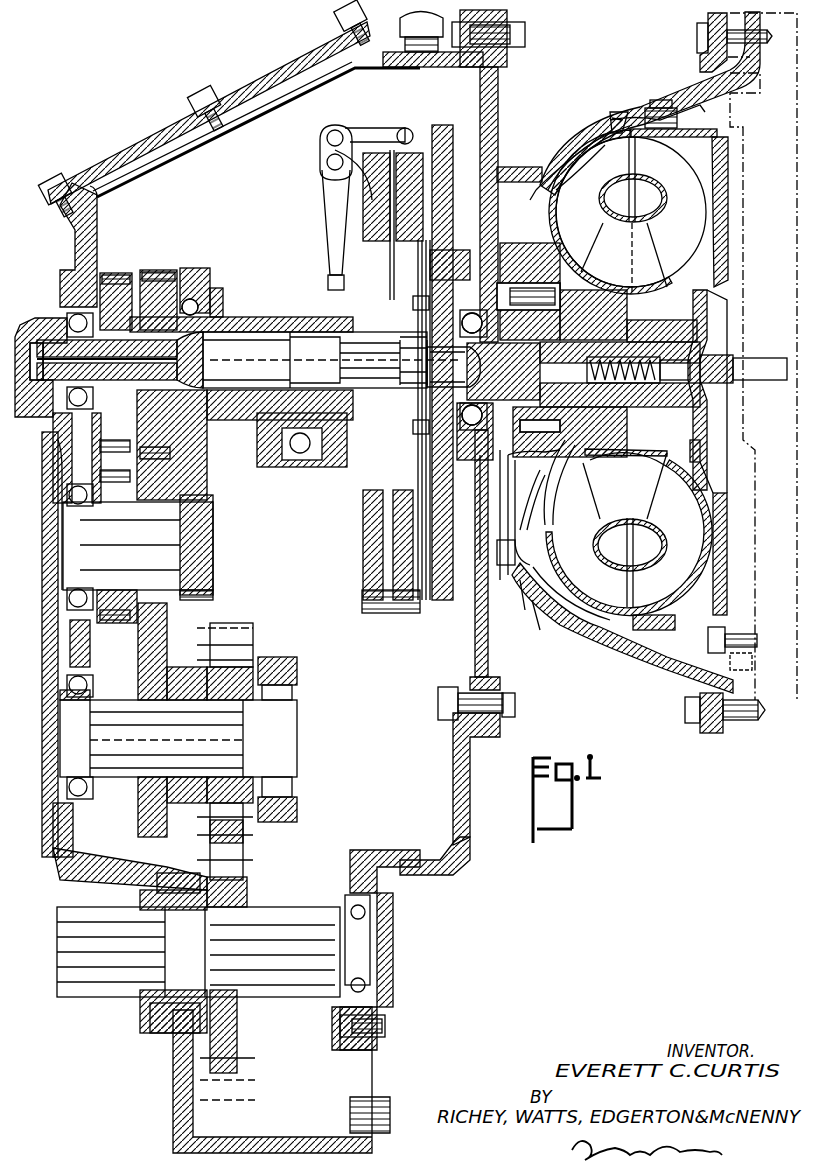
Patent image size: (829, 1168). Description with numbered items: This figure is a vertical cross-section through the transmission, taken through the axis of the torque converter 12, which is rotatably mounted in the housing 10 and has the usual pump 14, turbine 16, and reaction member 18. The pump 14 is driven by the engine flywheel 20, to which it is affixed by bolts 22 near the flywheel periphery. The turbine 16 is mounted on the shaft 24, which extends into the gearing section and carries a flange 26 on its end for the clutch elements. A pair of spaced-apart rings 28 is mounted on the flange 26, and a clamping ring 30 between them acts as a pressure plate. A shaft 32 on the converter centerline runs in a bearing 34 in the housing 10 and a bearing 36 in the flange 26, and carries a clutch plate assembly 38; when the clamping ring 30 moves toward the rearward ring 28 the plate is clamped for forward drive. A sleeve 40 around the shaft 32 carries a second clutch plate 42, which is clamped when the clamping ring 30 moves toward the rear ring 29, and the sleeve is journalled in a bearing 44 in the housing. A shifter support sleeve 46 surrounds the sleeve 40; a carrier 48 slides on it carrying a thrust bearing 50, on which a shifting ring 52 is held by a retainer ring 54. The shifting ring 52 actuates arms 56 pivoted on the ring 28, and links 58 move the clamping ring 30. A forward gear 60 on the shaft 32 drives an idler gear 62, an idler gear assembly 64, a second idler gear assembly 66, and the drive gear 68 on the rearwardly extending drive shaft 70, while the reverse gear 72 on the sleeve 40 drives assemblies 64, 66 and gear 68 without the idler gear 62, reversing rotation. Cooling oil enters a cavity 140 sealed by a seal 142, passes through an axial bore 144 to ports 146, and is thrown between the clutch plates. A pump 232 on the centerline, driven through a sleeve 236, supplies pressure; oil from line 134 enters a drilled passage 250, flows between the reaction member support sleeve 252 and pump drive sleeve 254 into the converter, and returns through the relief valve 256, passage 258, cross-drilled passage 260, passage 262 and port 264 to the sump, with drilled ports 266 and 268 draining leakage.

The housing 10 is at (562, 120).
The torque converter 12 is at (695, 125).
The pump 14 is at (612, 128).
The turbine 16 is at (677, 143).
The reaction member 18 is at (645, 252).
The engine flywheel 20 is at (745, 483).
The bolts 22 is at (708, 641).
The shaft 24 is at (503, 371).
The flange 26 is at (418, 458).
The rings 28 is at (455, 600).
The rear ring 29 is at (362, 553).
The clamping ring 30 is at (382, 600).
The shaft 32 is at (237, 340).
The bearing 34 is at (45, 318).
The bearing 36 is at (453, 367).
The clutch plate assembly 38 is at (422, 480).
The sleeve 40 is at (215, 310).
The second clutch plate 42 is at (385, 455).
The bearing 44 is at (190, 290).
The shifter support sleeve 46 is at (237, 420).
The carrier 48 is at (262, 445).
The thrust bearing 50 is at (292, 470).
The shifting ring 52 is at (311, 470).
The retainer ring 54 is at (268, 470).
The arms 56 is at (316, 212).
The links 58 is at (365, 135).
The forward gear 60 is at (112, 295).
The idler gear 62 is at (58, 470).
The idler gear assembly 64 is at (120, 540).
The second idler gear assembly 66 is at (253, 672).
The drive gear 68 is at (255, 863).
The drive shaft 70 is at (316, 910).
The reverse gear 72 is at (150, 295).
The line 134 is at (488, 575).
The cavity 140 is at (36, 382).
The seal 142 is at (58, 446).
The axial bore 144 is at (107, 360).
The ports 146 is at (315, 360).
The pump 232 is at (568, 482).
The sleeve 236 is at (590, 293).
The drilled passage 250 is at (510, 552).
The reaction member support sleeve 252 is at (606, 491).
The pump drive sleeve 254 is at (598, 456).
The pressure relief valve 256 is at (715, 384).
The passage 258 is at (545, 383).
The cross-drilled passage 260 is at (538, 350).
The passage 262 is at (478, 530).
The port 264 is at (478, 488).
The drilled port 266 is at (516, 517).
The drilled port 268 is at (533, 484).